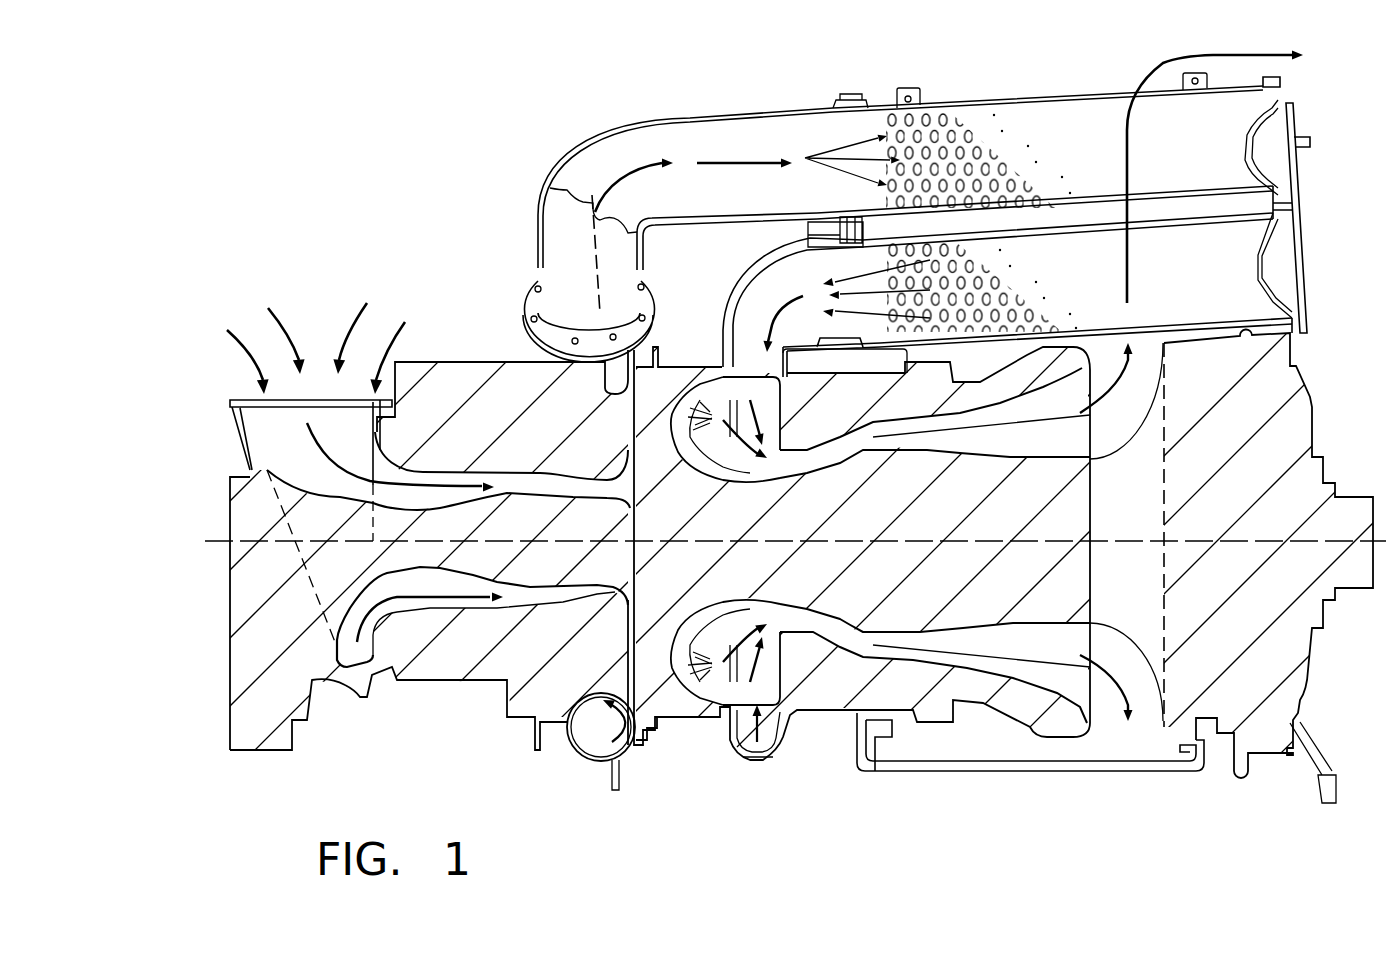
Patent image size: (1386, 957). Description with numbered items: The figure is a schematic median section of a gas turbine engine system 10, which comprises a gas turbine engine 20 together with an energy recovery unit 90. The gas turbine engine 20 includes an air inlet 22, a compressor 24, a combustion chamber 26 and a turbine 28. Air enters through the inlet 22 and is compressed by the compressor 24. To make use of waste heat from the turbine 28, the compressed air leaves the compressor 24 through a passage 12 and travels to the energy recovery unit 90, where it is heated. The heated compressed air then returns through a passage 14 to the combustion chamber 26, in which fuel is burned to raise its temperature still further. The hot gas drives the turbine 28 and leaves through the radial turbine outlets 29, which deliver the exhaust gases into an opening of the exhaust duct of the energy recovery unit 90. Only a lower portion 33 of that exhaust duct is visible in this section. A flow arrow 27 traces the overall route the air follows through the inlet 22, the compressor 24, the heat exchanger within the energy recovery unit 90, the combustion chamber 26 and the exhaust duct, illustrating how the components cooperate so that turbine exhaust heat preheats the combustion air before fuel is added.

The gas turbine engine system 10 is at (500, 71).
The passage 12 is at (563, 275).
The passage 14 is at (752, 327).
The gas turbine engine 20 is at (212, 517).
The air inlet 22 is at (312, 476).
The compressor 24 is at (547, 485).
The combustion chamber 26 is at (695, 458).
The flow arrow 27 is at (352, 323).
The turbine 28 is at (930, 443).
The turbine outlet 29 is at (1170, 360).
The lower portion of exhaust duct 33 is at (1033, 775).
The energy recovery unit 90 is at (1340, 203).